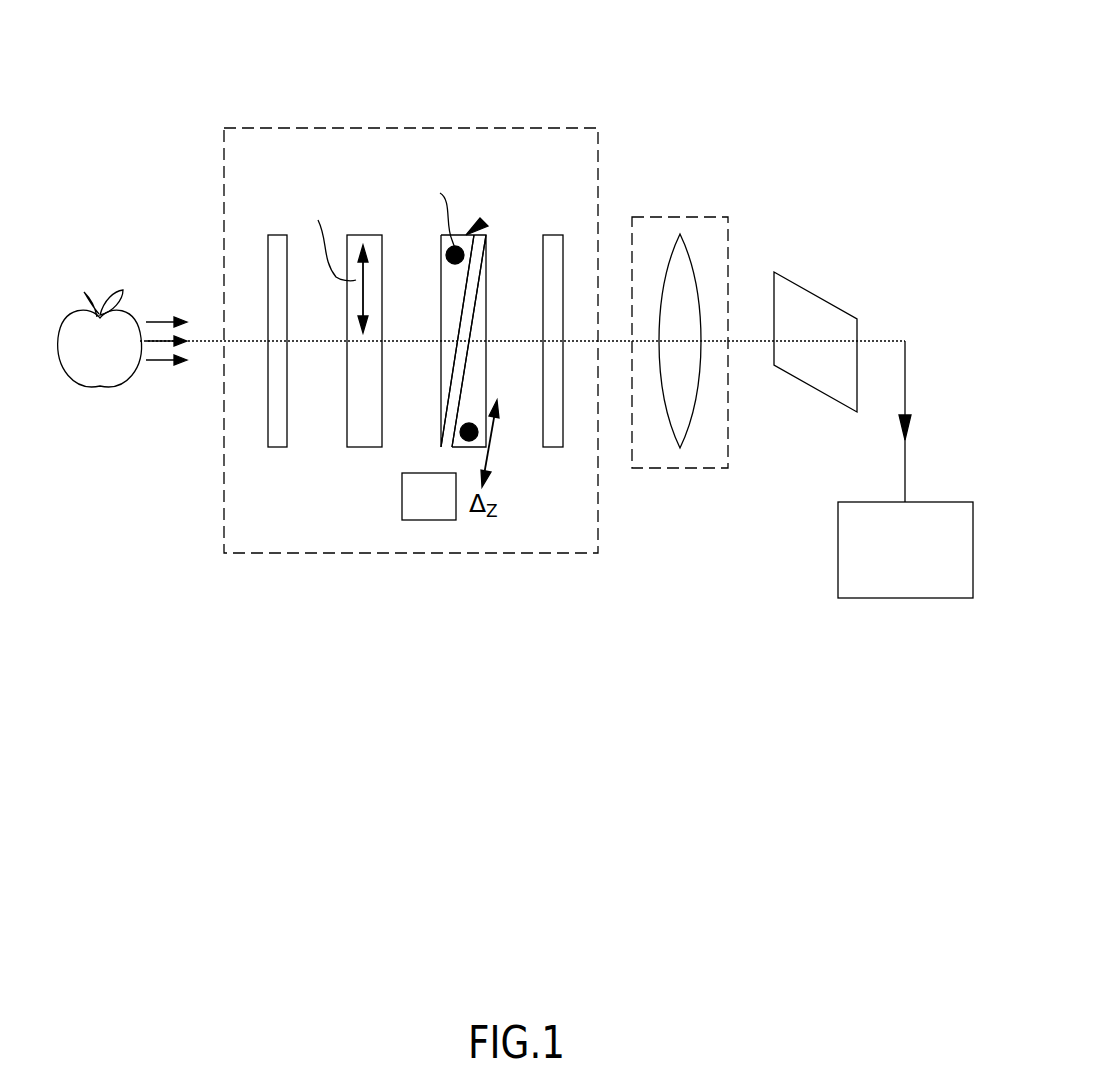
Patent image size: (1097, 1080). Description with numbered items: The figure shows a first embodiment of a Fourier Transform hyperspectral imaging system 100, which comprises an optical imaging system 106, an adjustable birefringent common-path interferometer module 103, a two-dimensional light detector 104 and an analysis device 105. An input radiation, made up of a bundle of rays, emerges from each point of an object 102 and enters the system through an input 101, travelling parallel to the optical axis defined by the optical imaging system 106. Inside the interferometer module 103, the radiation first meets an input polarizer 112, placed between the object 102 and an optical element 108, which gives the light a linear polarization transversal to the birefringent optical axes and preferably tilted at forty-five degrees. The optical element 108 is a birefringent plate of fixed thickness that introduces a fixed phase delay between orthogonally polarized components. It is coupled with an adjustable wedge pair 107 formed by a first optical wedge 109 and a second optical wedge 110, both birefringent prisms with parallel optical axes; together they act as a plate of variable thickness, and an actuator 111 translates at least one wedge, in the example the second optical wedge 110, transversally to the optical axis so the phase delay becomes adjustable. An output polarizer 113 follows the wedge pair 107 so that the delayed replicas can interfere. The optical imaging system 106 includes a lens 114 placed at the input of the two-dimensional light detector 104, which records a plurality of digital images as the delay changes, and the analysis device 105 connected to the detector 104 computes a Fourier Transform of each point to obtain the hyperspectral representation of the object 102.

The Fourier Transform hyperspectral imaging system 100 is at (537, 40).
The input 101 is at (204, 320).
The object 102 is at (100, 388).
The adjustable birefringent common-path interferometer module 103 is at (586, 108).
The two-dimensional light detector 104 is at (797, 283).
The analysis device 105 is at (838, 548).
The optical imaging system 106 is at (679, 217).
The adjustable wedge pair 107 is at (482, 224).
The optical element 108 is at (347, 428).
The first optical wedge 109 is at (444, 266).
The second optical wedge 110 is at (483, 316).
The actuator 111 is at (436, 520).
The input polarizer 112 is at (278, 262).
The output polarizer 113 is at (543, 418).
The lens 114 is at (692, 429).